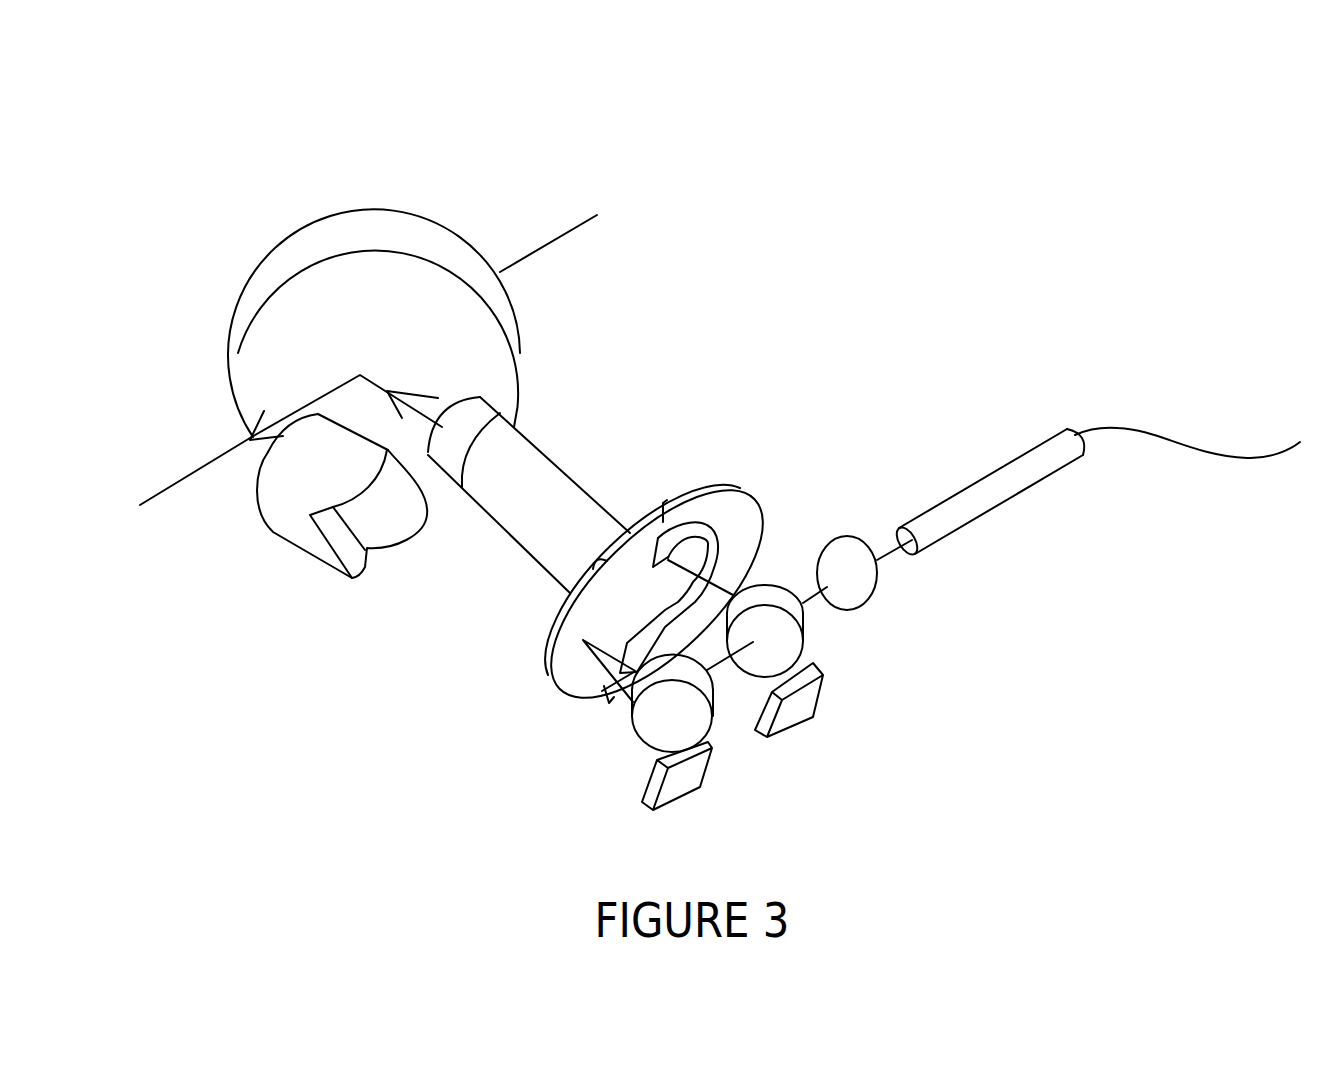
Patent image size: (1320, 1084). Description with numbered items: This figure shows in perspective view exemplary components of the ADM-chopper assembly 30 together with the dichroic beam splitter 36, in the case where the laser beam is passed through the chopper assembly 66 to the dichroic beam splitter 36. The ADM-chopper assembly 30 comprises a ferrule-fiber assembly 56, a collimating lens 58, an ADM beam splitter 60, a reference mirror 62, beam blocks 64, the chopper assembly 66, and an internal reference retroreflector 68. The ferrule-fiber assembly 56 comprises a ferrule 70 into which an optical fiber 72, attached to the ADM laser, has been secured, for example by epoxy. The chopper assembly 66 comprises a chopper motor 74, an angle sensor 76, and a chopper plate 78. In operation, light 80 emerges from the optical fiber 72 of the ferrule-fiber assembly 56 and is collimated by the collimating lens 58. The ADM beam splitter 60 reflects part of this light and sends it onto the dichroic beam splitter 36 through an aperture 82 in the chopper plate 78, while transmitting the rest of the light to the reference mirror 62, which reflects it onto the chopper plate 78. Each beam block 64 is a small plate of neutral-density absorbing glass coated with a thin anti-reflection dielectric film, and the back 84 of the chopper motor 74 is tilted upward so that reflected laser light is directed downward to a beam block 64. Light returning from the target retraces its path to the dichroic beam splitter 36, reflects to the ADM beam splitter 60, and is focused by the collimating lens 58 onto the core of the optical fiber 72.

The ADM-chopper assembly 30 is at (894, 178).
The dichroic beam splitter 36 is at (380, 203).
The ferrule-fiber assembly 56 is at (1106, 357).
The collimating lens 58 is at (880, 580).
The ADM beam splitter 60 is at (807, 617).
The reference mirror 62 is at (633, 730).
The beam blocks 64 is at (703, 773).
The chopper assembly 66 is at (785, 375).
The internal reference retroreflector 68 is at (295, 547).
The ferrule 70 is at (1007, 503).
The optical fiber 72 is at (1150, 428).
The chopper motor 74 is at (529, 510).
The angle sensor 76 is at (503, 420).
The chopper plate 78 is at (671, 578).
The light 80 is at (880, 545).
The aperture 82 is at (702, 547).
The back of the chopper motor 84 is at (470, 507).